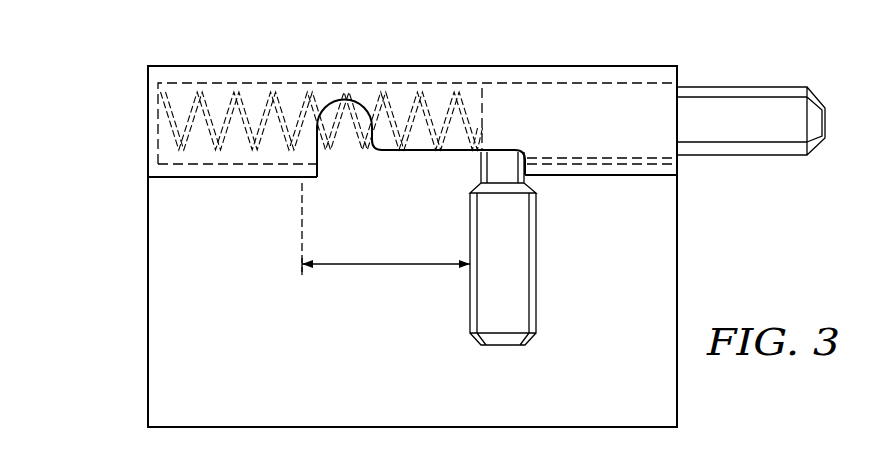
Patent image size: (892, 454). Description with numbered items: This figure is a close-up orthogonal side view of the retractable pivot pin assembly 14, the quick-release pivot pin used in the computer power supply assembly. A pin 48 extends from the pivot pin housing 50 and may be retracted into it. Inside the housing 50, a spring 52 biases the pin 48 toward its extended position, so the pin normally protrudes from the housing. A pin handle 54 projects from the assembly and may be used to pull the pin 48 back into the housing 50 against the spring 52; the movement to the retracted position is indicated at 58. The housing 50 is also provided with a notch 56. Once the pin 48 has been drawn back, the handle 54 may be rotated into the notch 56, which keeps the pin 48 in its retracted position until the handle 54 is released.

The retractable pivot pin assembly 14 is at (84, 139).
The pin 48 is at (742, 87).
The pivot pin housing 50 is at (253, 66).
The spring 52 is at (250, 178).
The pin handle 54 is at (538, 265).
The notch 56 is at (366, 107).
The retracted position 58 is at (390, 267).